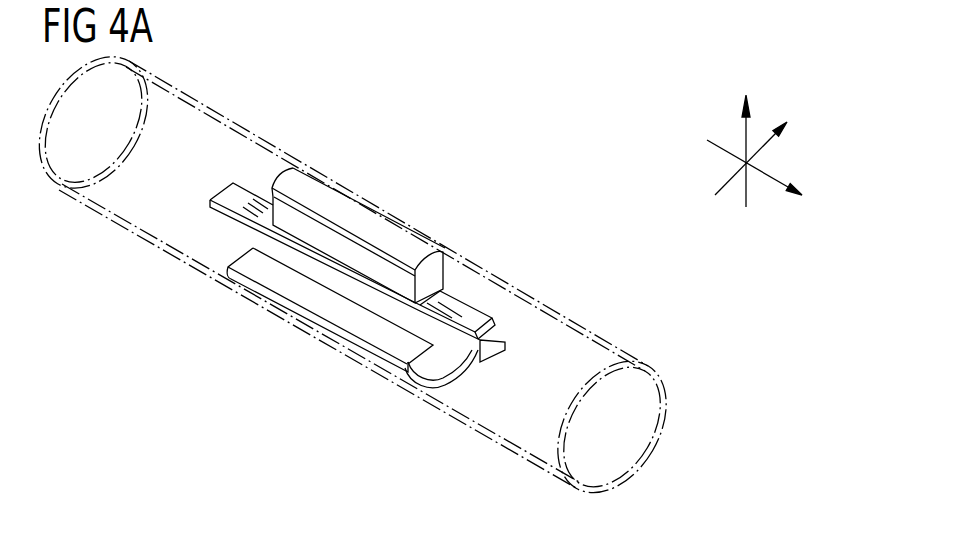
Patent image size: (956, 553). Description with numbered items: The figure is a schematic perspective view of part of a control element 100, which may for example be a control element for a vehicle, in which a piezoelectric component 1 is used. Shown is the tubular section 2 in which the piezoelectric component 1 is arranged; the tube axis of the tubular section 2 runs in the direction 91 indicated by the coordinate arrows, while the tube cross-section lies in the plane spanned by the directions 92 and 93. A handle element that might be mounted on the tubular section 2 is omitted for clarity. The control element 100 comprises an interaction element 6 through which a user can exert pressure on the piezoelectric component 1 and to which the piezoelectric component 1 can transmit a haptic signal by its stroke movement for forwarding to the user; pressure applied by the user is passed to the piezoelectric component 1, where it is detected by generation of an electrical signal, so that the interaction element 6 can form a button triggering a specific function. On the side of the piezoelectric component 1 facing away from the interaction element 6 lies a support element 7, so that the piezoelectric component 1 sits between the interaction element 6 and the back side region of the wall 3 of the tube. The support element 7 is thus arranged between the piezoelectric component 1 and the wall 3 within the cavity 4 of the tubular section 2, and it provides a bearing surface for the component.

The piezoelectric component 1 is at (413, 320).
The tubular section 2 is at (87, 170).
The wall 3 is at (665, 388).
The cavity 4 is at (627, 445).
The interaction element 6 is at (390, 238).
The support element 7 is at (343, 313).
The direction 91 is at (765, 177).
The direction 92 is at (743, 133).
The direction 93 is at (763, 148).
The control element 100 is at (505, 118).